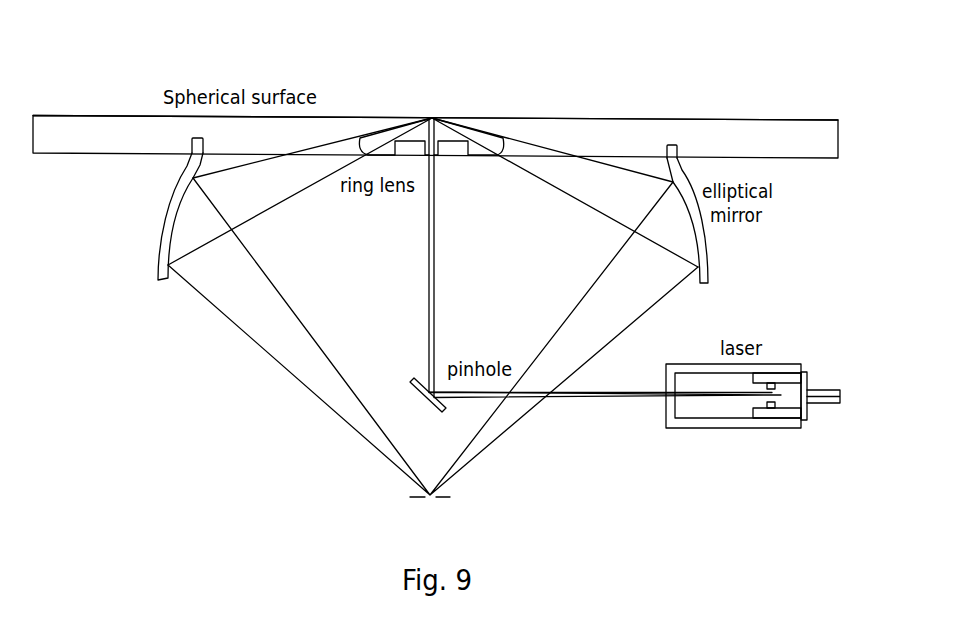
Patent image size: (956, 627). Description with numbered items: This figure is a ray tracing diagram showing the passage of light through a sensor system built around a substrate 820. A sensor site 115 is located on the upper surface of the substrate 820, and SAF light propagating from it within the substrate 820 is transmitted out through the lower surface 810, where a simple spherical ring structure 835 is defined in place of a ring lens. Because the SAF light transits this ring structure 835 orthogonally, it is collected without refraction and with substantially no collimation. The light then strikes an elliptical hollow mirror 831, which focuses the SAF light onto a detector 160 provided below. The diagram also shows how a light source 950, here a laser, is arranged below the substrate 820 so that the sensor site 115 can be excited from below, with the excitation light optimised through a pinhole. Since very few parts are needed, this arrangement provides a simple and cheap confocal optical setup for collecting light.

The sensor site 115 is at (432, 117).
The detector 160 is at (426, 499).
The lower surface 810 is at (83, 153).
The substrate 820 is at (713, 133).
The elliptical hollow mirror 831 is at (712, 255).
The spherical ring structure 835 is at (442, 159).
The light source 950 is at (692, 428).